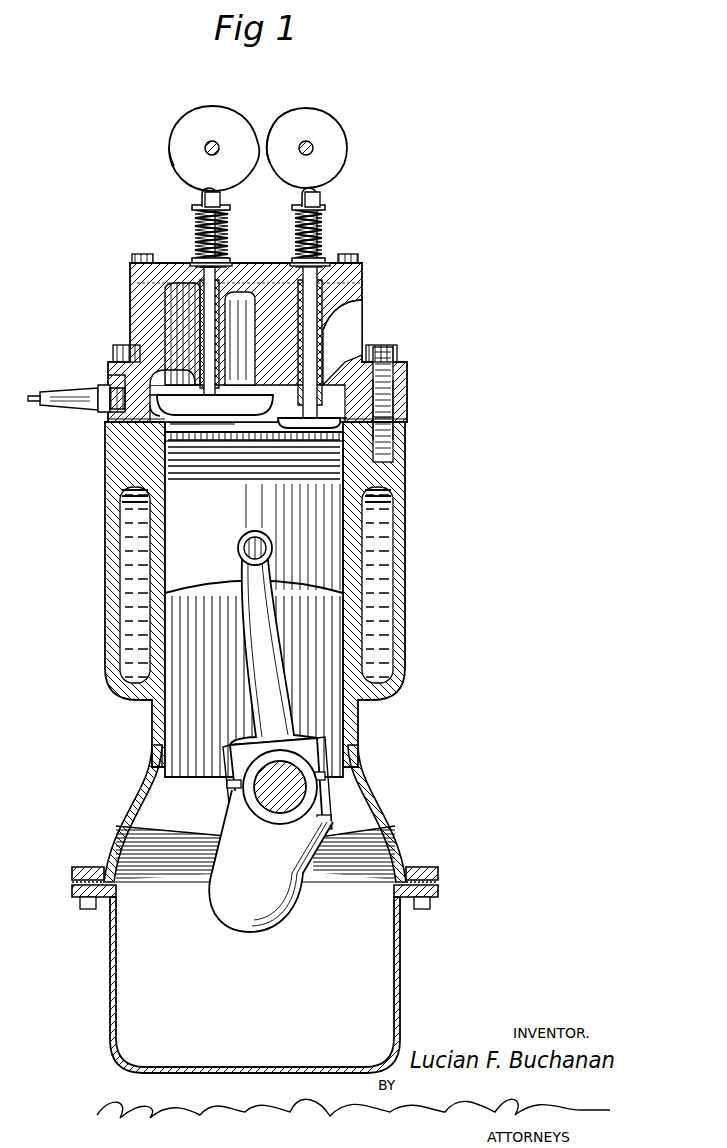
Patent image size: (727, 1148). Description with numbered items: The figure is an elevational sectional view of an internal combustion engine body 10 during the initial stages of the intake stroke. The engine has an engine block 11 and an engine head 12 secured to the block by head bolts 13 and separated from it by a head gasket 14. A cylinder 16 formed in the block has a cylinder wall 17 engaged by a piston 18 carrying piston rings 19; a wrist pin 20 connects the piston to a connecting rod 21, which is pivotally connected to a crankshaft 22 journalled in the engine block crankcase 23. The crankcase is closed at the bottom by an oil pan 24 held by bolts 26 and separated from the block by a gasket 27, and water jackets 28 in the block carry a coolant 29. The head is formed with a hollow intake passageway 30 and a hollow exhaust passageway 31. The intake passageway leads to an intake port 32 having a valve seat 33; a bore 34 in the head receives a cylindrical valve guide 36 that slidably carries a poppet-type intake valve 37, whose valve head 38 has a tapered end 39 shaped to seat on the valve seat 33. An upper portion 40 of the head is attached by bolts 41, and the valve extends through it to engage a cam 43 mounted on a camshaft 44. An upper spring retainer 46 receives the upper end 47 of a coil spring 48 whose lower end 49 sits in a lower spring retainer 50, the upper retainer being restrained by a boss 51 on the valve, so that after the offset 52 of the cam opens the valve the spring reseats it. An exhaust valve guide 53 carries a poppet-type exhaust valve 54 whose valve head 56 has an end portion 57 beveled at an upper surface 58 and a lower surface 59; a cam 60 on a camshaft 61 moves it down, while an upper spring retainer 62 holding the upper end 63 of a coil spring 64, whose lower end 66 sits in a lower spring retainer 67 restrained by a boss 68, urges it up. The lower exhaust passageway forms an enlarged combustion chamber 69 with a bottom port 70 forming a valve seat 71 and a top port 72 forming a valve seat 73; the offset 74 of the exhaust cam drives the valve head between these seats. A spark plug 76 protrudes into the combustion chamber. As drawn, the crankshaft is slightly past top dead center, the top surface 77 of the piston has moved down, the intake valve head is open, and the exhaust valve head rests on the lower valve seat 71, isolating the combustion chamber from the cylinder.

The internal combustion engine body 10 is at (432, 456).
The engine block 11 is at (273, 594).
The engine head 12 is at (408, 368).
The head bolts 13 is at (400, 346).
The head gasket 14 is at (402, 422).
The cylinder 16 is at (312, 627).
The cylinder wall 17 is at (350, 665).
The piston 18 is at (222, 514).
The piston rings 19 is at (152, 452).
The wrist pin 20 is at (238, 548).
The connecting rod 21 is at (292, 728).
The crankshaft 22 is at (305, 770).
The engine block crankcase 23 is at (165, 792).
The oil pan 24 is at (400, 970).
The bolts 26 is at (422, 909).
The gasket 27 is at (438, 885).
The water jackets 28 is at (393, 603).
The coolant 29 is at (385, 511).
The intake passageway 30 is at (257, 342).
The exhaust passageway 31 is at (175, 318).
The intake port 32 is at (322, 400).
The valve seat 33 is at (386, 401).
The bore 34 is at (355, 283).
The cylindrical valve guide 36 is at (345, 311).
The intake valve 37 is at (350, 297).
The valve head 38 is at (345, 422).
The tapered end 39 is at (338, 415).
The upper portion 40 is at (333, 262).
The bolts 41 is at (352, 254).
The cam 43 is at (309, 146).
The camshaft 44 is at (313, 146).
The upper spring retainer 46 is at (320, 198).
The upper end 47 is at (299, 208).
The coil spring 48 is at (322, 212).
The lower end 49 is at (297, 258).
The lower spring retainer 50 is at (297, 263).
The boss 51 is at (302, 198).
The offset 52 is at (282, 173).
The exhaust valve guide 53 is at (193, 262).
The exhaust valve 54 is at (200, 265).
The valve head 56 is at (250, 400).
The end portion 57 is at (160, 396).
The upper surface 58 is at (171, 402).
The lower surface 59 is at (150, 432).
The cam 60 is at (202, 138).
The camshaft 61 is at (213, 141).
The upper spring retainer 62 is at (202, 199).
The upper end 63 is at (196, 208).
The coil spring 64 is at (203, 226).
The lower end 66 is at (226, 258).
The lower spring retainer 67 is at (228, 262).
The boss 68 is at (222, 198).
The combustion chamber 69 is at (130, 390).
The port 70 is at (200, 428).
The valve seat 71 is at (258, 430).
The port 72 is at (186, 380).
The valve seat 73 is at (239, 338).
The offset 74 is at (172, 170).
The spark plug 76 is at (60, 408).
The top surface 77 is at (226, 428).